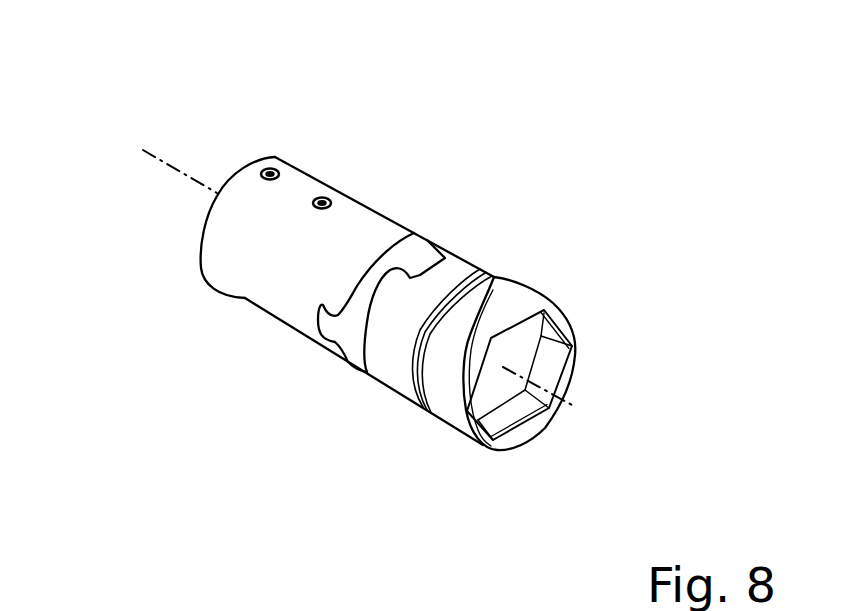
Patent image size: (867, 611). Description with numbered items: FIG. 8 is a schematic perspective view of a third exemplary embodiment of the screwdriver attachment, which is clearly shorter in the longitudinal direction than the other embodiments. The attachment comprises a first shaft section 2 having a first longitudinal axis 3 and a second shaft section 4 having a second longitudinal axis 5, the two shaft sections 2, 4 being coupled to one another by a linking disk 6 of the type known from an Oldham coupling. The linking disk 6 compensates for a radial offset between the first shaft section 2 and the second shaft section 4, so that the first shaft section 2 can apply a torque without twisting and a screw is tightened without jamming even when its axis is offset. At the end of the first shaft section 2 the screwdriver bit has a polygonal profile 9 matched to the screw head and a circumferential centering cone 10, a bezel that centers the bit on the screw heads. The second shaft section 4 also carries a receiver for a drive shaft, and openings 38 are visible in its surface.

The first shaft section 2 is at (435, 285).
The first longitudinal axis 3 is at (575, 413).
The second shaft section 4 is at (367, 223).
The second longitudinal axis 5 is at (148, 148).
The linking disk 6 is at (412, 256).
The polygonal profile 9 is at (517, 415).
The centering cone 10 is at (554, 309).
The openings 38 is at (270, 168).